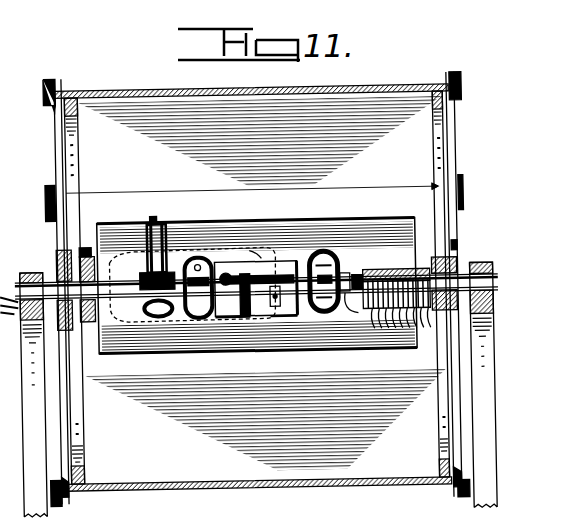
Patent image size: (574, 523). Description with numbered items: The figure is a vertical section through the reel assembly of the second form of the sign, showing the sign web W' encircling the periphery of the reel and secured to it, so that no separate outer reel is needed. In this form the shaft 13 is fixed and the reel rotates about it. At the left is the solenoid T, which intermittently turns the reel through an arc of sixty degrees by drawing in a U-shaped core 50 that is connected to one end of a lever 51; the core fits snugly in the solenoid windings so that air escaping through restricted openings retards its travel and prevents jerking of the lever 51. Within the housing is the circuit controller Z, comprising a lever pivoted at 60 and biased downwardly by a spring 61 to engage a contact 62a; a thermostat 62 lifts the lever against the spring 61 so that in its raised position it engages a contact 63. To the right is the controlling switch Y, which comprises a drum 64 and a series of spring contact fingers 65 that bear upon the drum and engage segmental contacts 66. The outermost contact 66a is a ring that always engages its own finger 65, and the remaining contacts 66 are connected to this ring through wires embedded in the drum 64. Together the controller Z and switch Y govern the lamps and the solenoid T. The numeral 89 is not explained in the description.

The sign web W' is at (256, 280).
The shaft 13 is at (28, 266).
The U-shaped core 50 is at (147, 240).
The lever 51 is at (153, 215).
The solenoid T is at (168, 248).
The circuit controller Z is at (265, 298).
The controlling switch Y is at (378, 266).
The pivot 60 is at (255, 289).
The spring 61 is at (252, 250).
The thermostat 62 is at (247, 316).
The contact 62a is at (294, 320).
The contact 63 is at (374, 312).
The drum 64 is at (349, 270).
The spring contact fingers 65 is at (313, 268).
The segmental contacts 66 is at (399, 276).
The ring contact 66a is at (457, 256).
The contact 89 is at (278, 282).